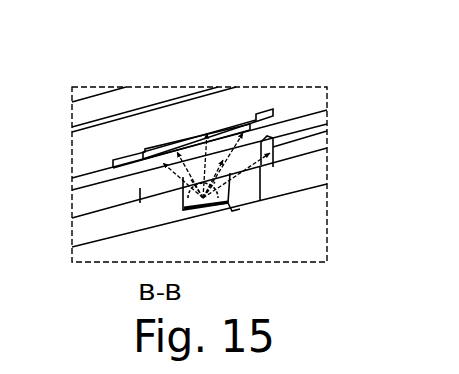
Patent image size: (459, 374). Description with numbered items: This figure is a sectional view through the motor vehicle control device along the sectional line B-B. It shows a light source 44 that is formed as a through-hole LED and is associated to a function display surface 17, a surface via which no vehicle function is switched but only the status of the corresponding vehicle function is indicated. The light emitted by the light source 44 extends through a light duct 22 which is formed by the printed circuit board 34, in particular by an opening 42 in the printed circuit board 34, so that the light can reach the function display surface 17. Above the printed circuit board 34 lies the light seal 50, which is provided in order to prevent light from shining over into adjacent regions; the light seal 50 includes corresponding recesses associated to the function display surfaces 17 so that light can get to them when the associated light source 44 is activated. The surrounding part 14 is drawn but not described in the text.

The housing rail 14 is at (261, 99).
The function display surface 17 is at (179, 136).
The light duct 22 is at (176, 185).
The printed circuit board 34 is at (292, 174).
The opening 42 is at (176, 172).
The light source 44 is at (216, 208).
The light seal 50 is at (307, 140).